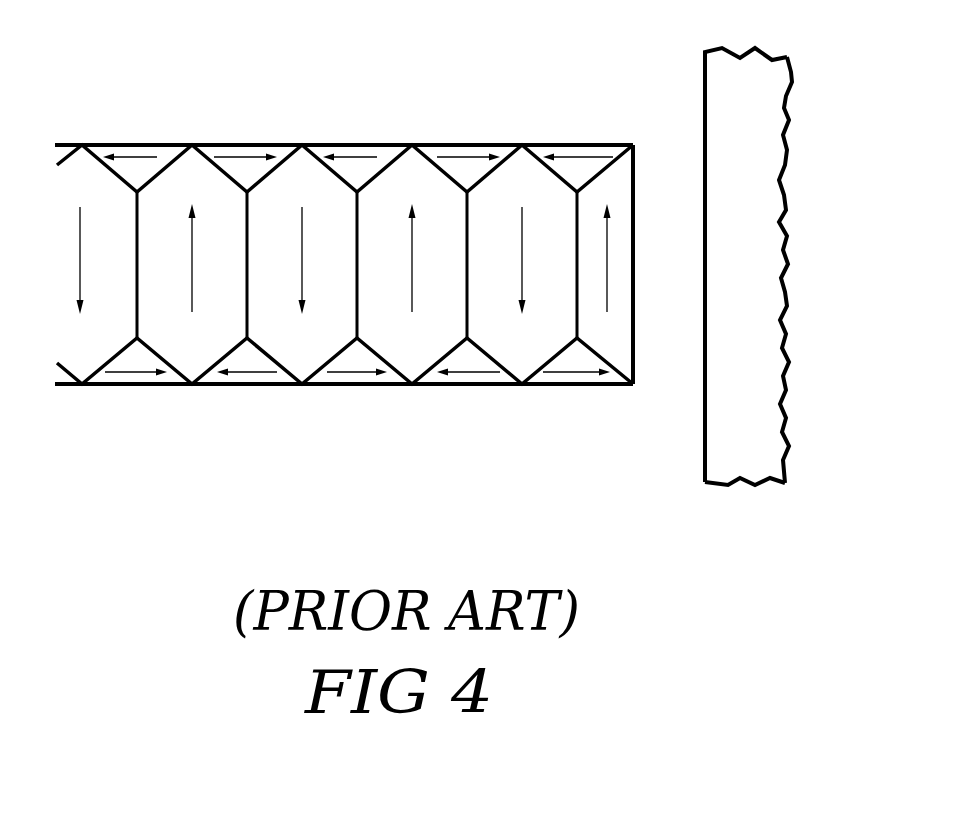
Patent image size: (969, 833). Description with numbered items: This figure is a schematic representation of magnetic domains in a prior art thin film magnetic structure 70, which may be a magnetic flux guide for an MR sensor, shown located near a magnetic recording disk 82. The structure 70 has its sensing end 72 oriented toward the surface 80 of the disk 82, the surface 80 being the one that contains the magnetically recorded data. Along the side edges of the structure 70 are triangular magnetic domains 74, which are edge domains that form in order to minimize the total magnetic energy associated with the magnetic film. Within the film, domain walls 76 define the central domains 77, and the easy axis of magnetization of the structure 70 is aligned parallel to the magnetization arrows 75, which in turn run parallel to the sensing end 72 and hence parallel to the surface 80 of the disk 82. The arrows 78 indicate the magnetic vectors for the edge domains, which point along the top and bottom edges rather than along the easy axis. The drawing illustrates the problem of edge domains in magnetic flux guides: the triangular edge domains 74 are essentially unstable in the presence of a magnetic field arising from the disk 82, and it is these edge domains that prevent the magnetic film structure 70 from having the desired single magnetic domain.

The thin film magnetic structure 70 is at (417, 120).
The sensing end 72 is at (635, 328).
The triangular magnetic domains 74 is at (210, 147).
The magnetization arrows 75 is at (303, 255).
The domain walls 76 is at (358, 205).
The central domains 77 is at (305, 365).
The arrows 78 is at (577, 157).
The surface 80 is at (693, 92).
The disk 82 is at (758, 219).